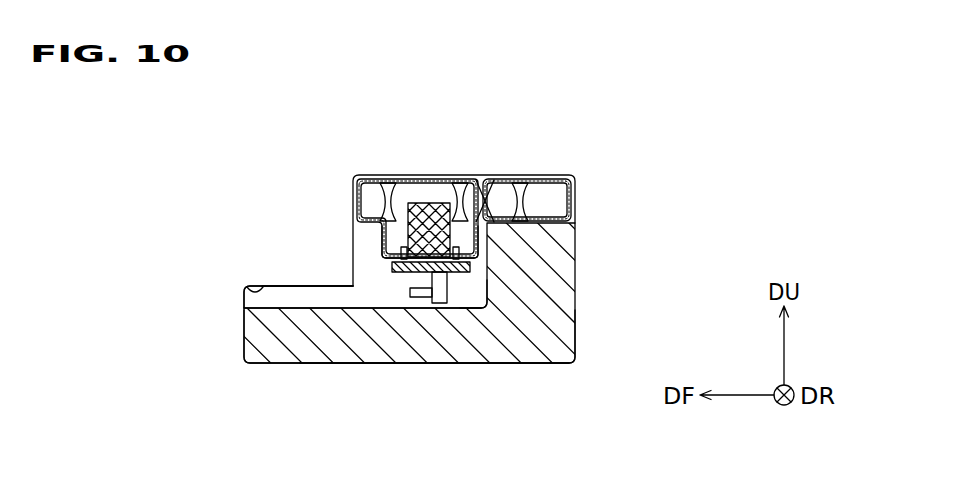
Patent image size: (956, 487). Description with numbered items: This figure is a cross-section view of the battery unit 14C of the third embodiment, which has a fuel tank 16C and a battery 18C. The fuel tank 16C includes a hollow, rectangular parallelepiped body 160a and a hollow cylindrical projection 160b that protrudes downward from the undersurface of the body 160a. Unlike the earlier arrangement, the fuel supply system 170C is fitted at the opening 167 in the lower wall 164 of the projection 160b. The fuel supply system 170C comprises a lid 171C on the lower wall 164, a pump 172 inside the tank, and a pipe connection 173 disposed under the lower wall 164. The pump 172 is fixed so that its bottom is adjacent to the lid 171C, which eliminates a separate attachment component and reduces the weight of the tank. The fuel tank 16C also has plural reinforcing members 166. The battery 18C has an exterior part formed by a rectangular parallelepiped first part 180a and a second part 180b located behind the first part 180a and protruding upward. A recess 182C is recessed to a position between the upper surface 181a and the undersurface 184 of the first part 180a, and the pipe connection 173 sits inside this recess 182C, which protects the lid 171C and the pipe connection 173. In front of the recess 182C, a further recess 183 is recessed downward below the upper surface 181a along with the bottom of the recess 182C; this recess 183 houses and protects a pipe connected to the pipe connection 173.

The battery unit 14C is at (684, 160).
The fuel tank 16C is at (588, 202).
The battery 18C is at (585, 350).
The first part 180a is at (218, 291).
The second part 180b is at (218, 225).
The upper surface 181a is at (278, 286).
The recess 182C is at (485, 291).
The recess 183 is at (252, 288).
The undersurface 184 is at (470, 364).
The body 160a is at (338, 180).
The projection 160b is at (338, 226).
The lower wall 164 is at (471, 268).
The reinforcing members 166 is at (439, 194).
The opening 167 is at (402, 272).
The fuel supply system 170C is at (558, 100).
The lid 171C is at (483, 196).
The pump 172 is at (457, 207).
The pipe connection 173 is at (473, 200).